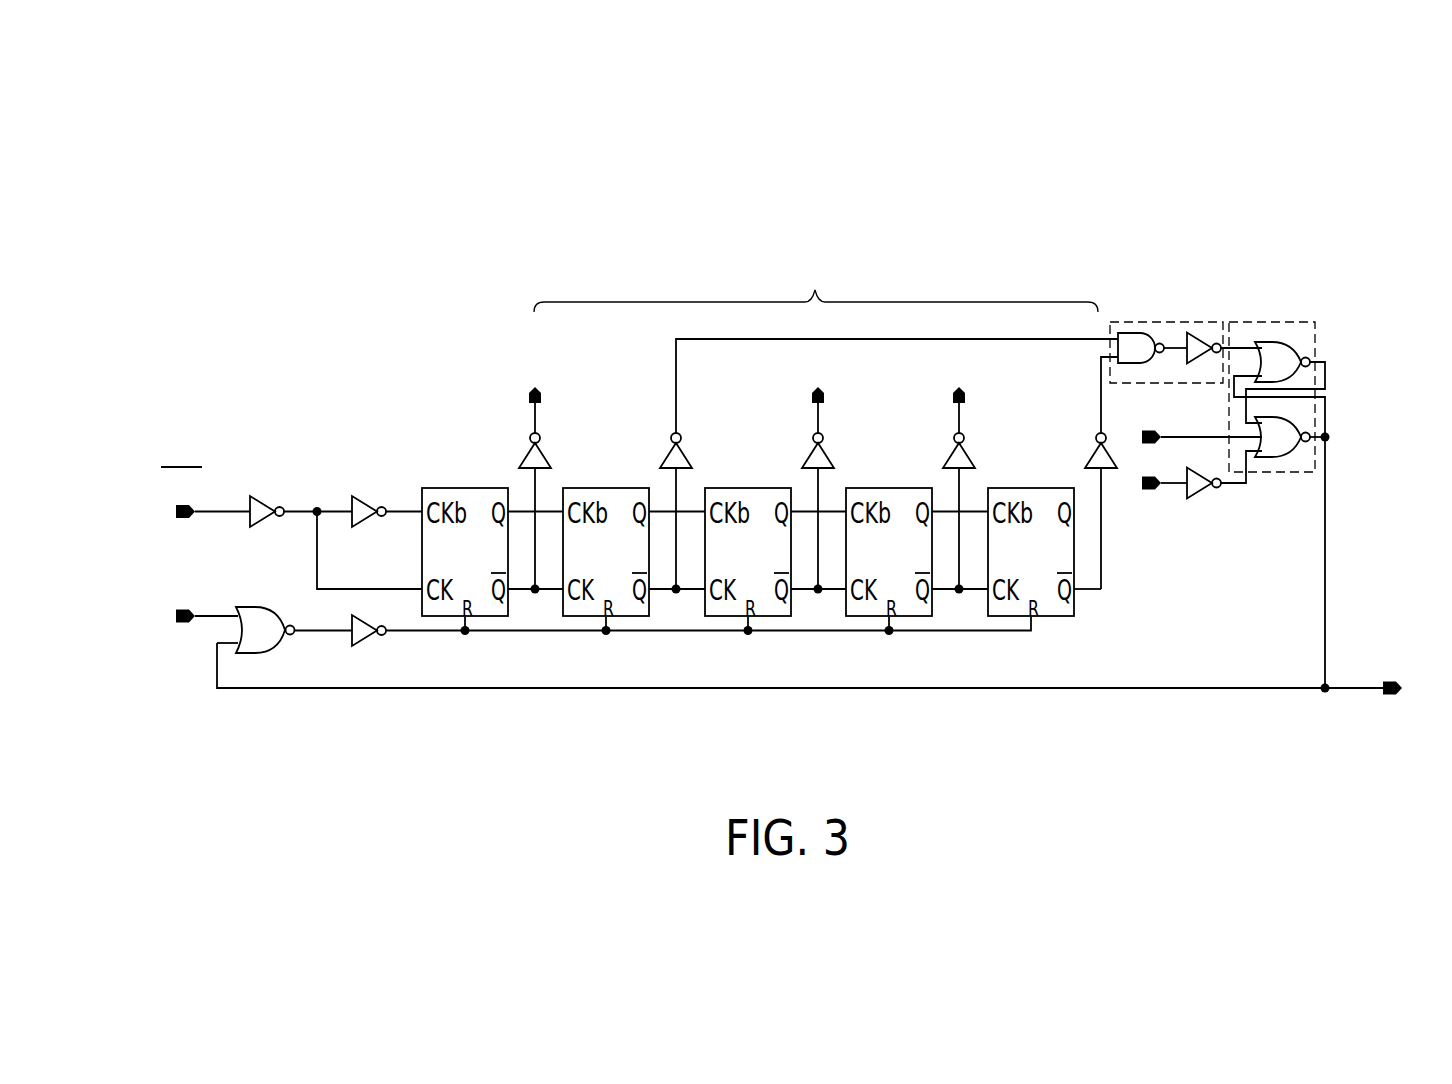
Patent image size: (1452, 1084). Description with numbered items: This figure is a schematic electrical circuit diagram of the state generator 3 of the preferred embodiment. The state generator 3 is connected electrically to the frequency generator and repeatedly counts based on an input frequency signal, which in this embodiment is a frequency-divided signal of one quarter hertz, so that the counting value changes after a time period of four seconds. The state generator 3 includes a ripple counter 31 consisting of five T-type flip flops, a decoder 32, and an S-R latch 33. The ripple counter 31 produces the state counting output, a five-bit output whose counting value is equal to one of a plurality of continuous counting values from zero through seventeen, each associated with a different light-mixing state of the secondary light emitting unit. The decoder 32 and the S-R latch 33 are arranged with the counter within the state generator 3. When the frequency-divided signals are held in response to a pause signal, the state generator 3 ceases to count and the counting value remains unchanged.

The state generator 3 is at (1236, 192).
The ripple counter 31 is at (795, 656).
The decoder 32 is at (1160, 320).
The S-R latch 33 is at (1267, 320).